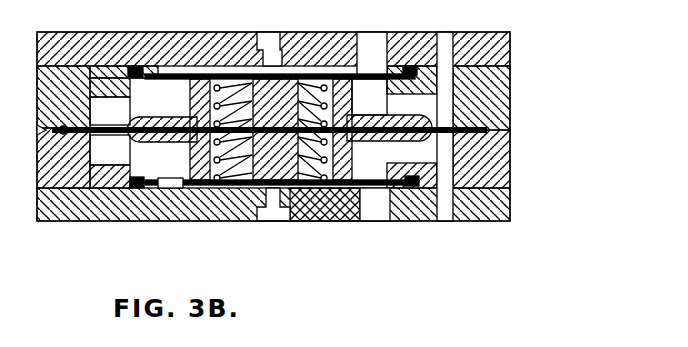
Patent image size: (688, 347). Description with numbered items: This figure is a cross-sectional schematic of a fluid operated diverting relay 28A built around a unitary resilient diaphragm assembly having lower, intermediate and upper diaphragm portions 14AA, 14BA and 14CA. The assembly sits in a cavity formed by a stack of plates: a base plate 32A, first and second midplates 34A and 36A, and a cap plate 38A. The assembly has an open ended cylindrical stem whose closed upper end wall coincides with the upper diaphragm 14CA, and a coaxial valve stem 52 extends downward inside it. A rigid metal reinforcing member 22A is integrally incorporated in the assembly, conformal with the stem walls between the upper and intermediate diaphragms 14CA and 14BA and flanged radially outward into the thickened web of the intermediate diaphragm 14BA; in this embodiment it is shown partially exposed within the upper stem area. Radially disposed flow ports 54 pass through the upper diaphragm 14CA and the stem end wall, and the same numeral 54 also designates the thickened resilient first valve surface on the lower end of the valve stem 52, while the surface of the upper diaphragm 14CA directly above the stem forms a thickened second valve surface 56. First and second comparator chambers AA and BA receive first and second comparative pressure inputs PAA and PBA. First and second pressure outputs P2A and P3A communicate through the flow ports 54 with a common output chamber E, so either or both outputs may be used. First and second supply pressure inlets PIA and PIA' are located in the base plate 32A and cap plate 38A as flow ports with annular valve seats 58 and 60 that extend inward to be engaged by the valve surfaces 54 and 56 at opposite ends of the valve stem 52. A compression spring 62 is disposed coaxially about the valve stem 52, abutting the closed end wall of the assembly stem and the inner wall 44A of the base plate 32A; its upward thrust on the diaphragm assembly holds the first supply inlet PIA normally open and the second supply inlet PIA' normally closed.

The upper diaphragm portion 14CA is at (177, 70).
The flow ports 54 is at (222, 78).
The annular valve seat 60 is at (253, 70).
The second supply pressure inlet PIA' is at (261, 37).
The second valve surface 56 is at (285, 76).
The second pressure output P3A is at (373, 43).
The second comparative pressure input PBA is at (450, 40).
The cap plate 38A is at (510, 44).
The second midplate 36A is at (500, 97).
The diverting relay 28A is at (618, 118).
The second comparator chamber BA is at (118, 117).
The rigid reinforcing member 22A is at (197, 90).
The compression spring 62 is at (346, 108).
The intermediate diaphragm portion 14BA is at (452, 116).
The first comparator chamber AA is at (119, 164).
The valve stem 52 is at (192, 145).
The first midplate 34A is at (500, 151).
The base plate 32A is at (503, 199).
The inner wall 44A is at (191, 188).
The common output chamber E is at (234, 148).
The annular valve seat 58 is at (284, 190).
The first supply pressure inlet PIA is at (275, 224).
The first pressure output P2A is at (361, 223).
The lower diaphragm portion 14AA is at (400, 185).
The first comparative pressure input PAA is at (450, 220).